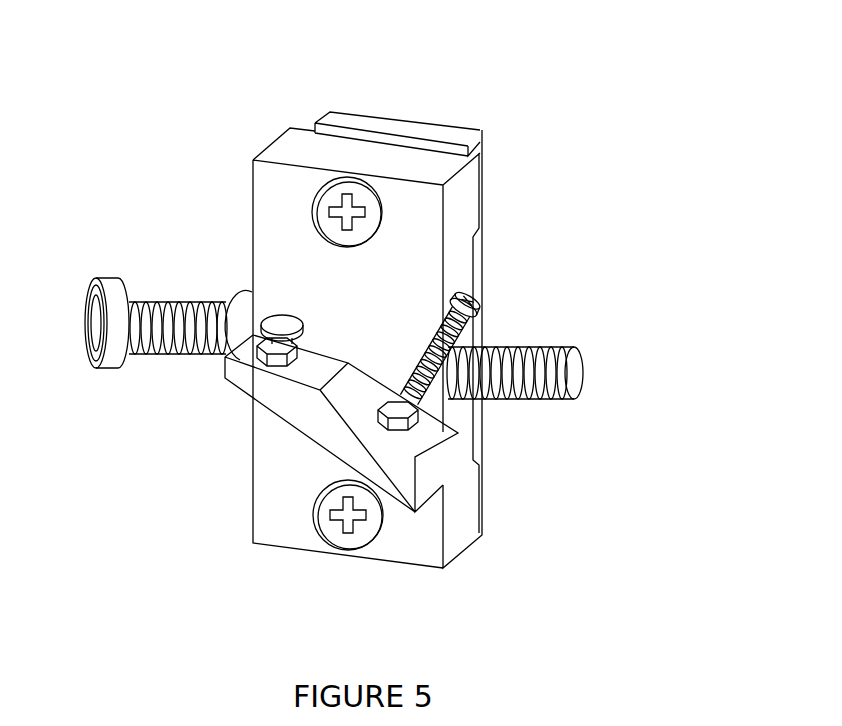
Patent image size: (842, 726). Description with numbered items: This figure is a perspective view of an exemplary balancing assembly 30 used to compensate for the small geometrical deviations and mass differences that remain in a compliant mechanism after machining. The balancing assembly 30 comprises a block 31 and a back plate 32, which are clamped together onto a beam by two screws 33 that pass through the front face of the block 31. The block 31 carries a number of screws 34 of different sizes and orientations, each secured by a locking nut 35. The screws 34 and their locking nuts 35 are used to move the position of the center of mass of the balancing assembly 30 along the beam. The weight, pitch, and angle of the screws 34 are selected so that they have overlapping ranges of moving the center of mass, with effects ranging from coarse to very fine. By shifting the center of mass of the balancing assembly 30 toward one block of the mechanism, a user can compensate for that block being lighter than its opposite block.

The balancing assembly 30 is at (197, 115).
The block 31 is at (458, 163).
The back plate 32 is at (422, 118).
The screws 33 is at (365, 228).
The screws 34 is at (278, 320).
The locking nuts 35 is at (243, 293).